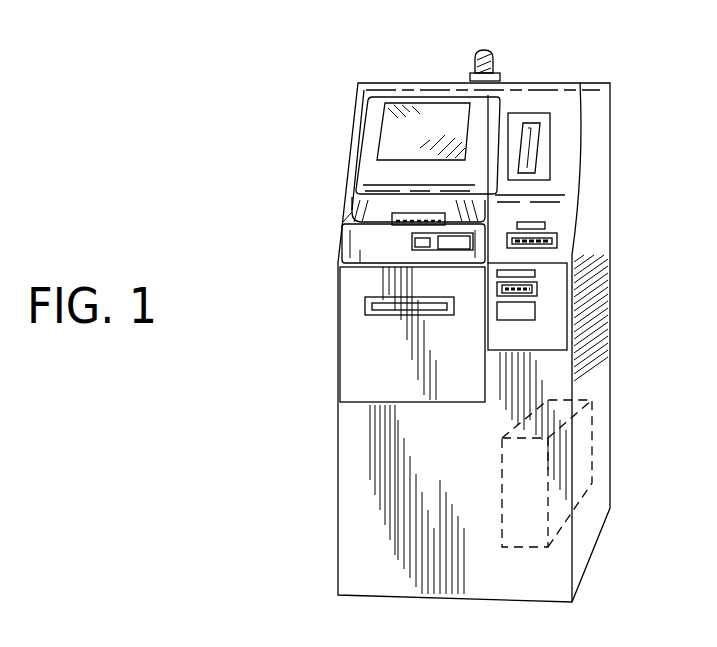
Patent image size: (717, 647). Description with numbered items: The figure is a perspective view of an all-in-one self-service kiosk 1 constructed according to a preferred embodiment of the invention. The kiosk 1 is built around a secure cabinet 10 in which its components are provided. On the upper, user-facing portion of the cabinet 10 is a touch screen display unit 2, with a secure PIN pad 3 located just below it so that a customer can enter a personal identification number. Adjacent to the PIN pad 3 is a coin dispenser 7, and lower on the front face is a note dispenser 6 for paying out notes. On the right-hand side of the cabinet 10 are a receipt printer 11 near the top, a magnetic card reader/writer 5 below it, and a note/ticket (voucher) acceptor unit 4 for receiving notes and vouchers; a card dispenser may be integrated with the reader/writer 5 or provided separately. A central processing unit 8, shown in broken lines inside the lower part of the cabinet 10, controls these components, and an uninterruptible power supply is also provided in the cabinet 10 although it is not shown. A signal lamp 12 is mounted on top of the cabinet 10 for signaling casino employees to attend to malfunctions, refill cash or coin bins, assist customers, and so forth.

The self-service kiosk 1 is at (268, 94).
The touch screen display unit 2 is at (393, 143).
The secure PIN pad 3 is at (345, 219).
The note/ticket acceptor unit 4 is at (537, 283).
The magnetic card reader/writer 5 is at (550, 240).
The note dispenser 6 is at (393, 307).
The coin dispenser 7 is at (448, 250).
The central processing unit 8 is at (525, 455).
The secure cabinet 10 is at (355, 462).
The receipt printer 11 is at (537, 113).
The signal lamp 12 is at (492, 52).